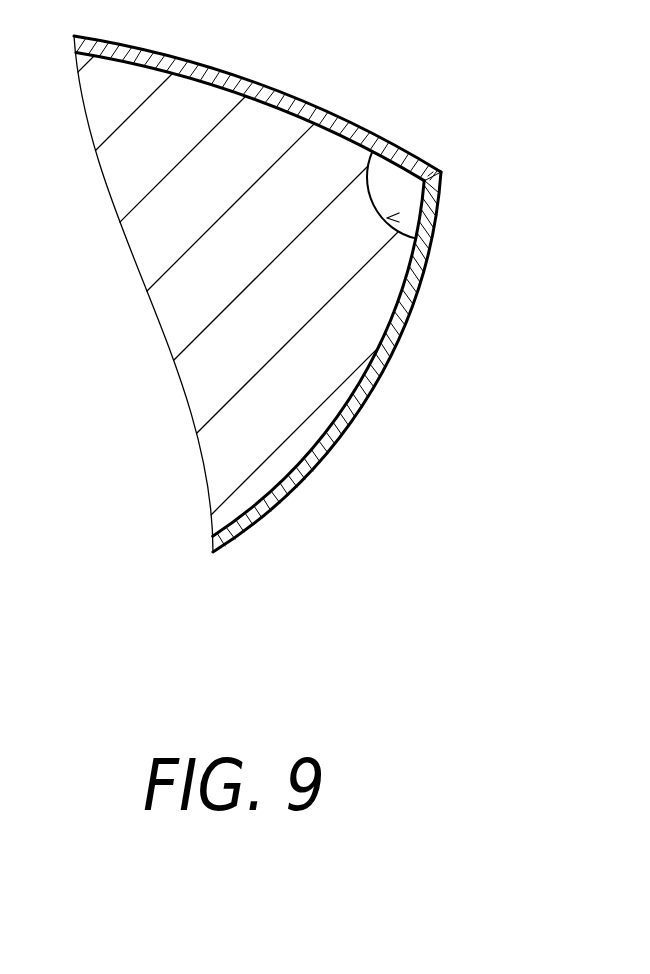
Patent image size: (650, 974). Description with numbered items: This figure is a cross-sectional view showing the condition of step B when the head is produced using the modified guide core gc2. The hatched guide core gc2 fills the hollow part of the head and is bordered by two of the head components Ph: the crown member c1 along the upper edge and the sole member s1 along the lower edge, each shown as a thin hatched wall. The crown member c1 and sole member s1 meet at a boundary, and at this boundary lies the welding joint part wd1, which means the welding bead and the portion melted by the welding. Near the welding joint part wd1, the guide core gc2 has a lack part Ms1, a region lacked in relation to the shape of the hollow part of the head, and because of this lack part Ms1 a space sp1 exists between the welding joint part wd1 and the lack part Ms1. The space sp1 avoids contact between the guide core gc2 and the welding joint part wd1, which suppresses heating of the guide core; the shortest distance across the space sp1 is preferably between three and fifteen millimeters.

The crown member c1 is at (342, 122).
The sole member s1 is at (278, 497).
The guide core gc2 is at (177, 318).
The space sp1 is at (398, 175).
The welding joint part wd1 is at (443, 172).
The lack part Ms1 is at (388, 218).